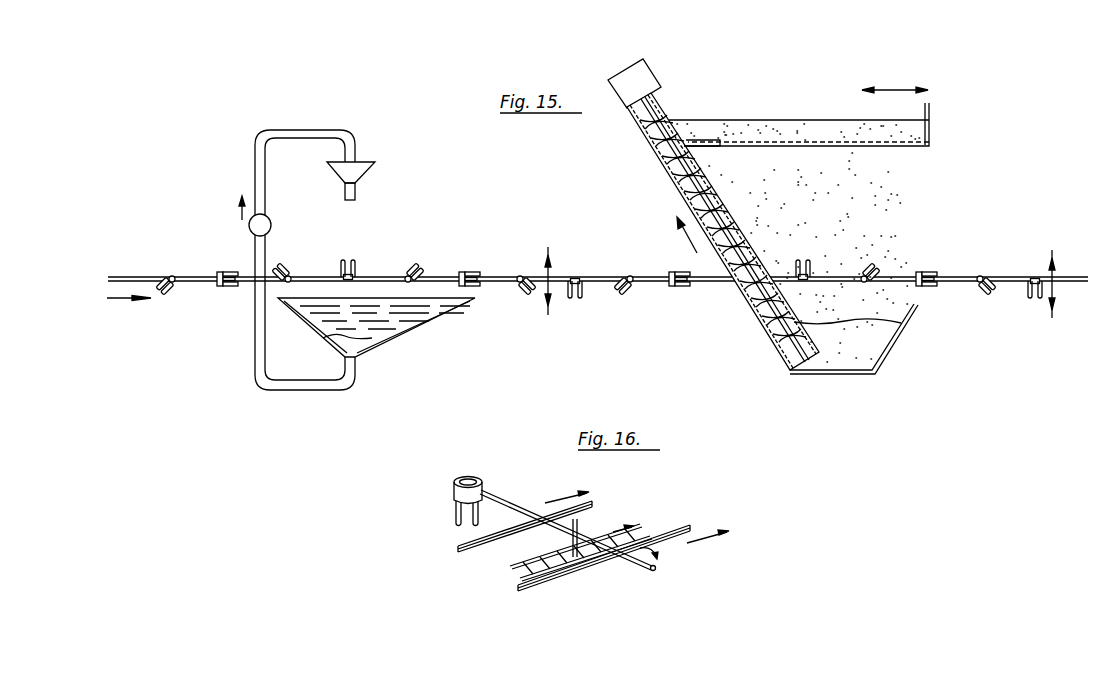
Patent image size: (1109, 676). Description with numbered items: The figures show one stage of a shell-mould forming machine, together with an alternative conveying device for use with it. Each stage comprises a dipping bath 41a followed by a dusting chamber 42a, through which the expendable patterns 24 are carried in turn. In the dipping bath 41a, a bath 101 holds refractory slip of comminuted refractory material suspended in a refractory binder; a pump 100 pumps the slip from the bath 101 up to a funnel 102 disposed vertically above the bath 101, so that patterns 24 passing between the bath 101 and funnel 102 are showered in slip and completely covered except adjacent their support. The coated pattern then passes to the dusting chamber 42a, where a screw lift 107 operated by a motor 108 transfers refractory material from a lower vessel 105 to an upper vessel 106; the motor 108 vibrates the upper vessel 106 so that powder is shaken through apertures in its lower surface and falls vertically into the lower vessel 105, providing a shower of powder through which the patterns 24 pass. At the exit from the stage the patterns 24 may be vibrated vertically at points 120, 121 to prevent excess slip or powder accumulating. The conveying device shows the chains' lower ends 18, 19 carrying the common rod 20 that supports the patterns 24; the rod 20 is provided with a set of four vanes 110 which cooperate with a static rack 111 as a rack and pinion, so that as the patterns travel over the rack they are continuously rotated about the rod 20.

In FIG. 15, the lower end 18 is at (594, 280).
In FIG. 16, the lower end 18 is at (617, 561).
In FIG. 16, the lower end 19 is at (540, 522).
In FIG. 16, the common rod 20 is at (647, 572).
In FIG. 15, the expendable pattern 24 is at (355, 272).
In FIG. 16, the expendable pattern 24 is at (481, 491).
In FIG. 15, the dipping bath 41a is at (378, 342).
In FIG. 15, the dusting chamber 42a is at (891, 215).
In FIG. 15, the pump 100 is at (255, 228).
In FIG. 15, the bath 101 is at (445, 318).
In FIG. 15, the funnel 102 is at (360, 172).
In FIG. 15, the lower vessel 105 is at (890, 348).
In FIG. 15, the upper vessel 106 is at (766, 137).
In FIG. 15, the screw lift 107 is at (693, 187).
In FIG. 15, the motor 108 is at (621, 74).
In FIG. 16, the vanes 110 is at (577, 521).
In FIG. 16, the static rack 111 is at (638, 534).
In FIG. 15, the point 120 is at (558, 292).
In FIG. 15, the point 121 is at (1072, 281).